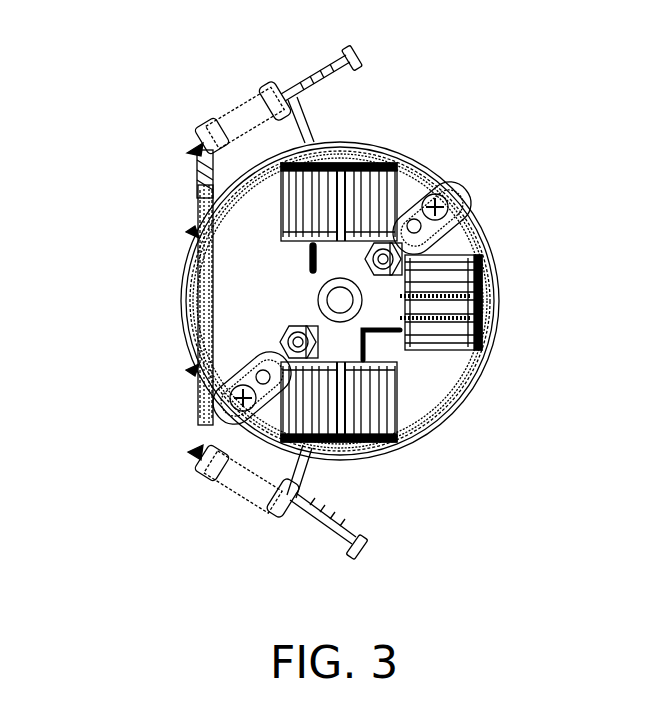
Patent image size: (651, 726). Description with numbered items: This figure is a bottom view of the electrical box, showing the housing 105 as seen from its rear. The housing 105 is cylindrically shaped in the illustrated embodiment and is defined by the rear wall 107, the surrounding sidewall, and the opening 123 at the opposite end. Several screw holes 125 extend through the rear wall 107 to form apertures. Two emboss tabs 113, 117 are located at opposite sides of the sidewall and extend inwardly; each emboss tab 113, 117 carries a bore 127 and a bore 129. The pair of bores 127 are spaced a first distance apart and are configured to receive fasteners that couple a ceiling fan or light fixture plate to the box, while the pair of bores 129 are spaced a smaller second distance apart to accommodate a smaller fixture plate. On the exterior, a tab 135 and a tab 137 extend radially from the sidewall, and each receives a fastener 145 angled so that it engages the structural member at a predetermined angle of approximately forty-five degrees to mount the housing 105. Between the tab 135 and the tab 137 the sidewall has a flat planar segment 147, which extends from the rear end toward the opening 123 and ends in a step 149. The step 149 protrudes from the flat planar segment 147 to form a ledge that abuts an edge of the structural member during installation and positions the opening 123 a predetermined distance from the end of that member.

The housing 105 is at (398, 150).
The rear wall 107 is at (243, 236).
The emboss tab 113 is at (245, 383).
The emboss tab 117 is at (452, 228).
The opening 123 is at (488, 316).
The screw hole 125 is at (372, 262).
The bore 127 is at (437, 200).
The bore 129 is at (424, 226).
The tab 135 is at (310, 478).
The tab 137 is at (205, 175).
The fastener 145 is at (363, 62).
The flat planar segment 147 is at (206, 326).
The step 149 is at (197, 310).